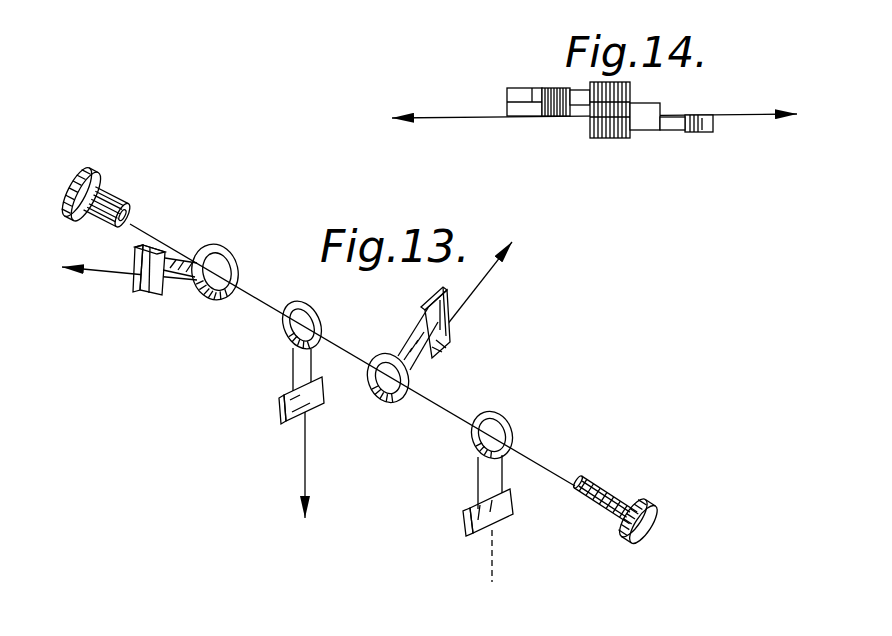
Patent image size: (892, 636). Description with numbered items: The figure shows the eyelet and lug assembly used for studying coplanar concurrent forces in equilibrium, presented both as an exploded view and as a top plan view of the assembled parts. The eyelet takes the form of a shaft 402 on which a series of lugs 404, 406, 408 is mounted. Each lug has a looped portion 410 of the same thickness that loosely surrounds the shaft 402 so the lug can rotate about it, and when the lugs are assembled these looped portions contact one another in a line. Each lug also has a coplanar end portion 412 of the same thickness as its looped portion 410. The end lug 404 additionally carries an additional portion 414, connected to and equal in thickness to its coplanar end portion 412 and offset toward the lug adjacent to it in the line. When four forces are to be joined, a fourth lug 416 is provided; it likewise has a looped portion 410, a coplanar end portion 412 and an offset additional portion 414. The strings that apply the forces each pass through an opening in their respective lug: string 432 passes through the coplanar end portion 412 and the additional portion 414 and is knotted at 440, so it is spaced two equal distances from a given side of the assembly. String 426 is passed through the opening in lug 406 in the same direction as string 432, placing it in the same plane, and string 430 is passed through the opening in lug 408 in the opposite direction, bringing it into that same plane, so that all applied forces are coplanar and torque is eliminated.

In FIG. 14, the shaft 402 is at (610, 137).
In FIG. 13, the shaft 402 is at (104, 196).
In FIG. 14, the lug 404 is at (517, 120).
In FIG. 13, the lug 404 is at (226, 242).
In FIG. 14, the lug 406 is at (650, 100).
In FIG. 13, the lug 406 is at (295, 302).
In FIG. 14, the lug 408 is at (668, 131).
In FIG. 13, the lug 408 is at (402, 347).
In FIG. 14, the looped portion 410 is at (606, 94).
In FIG. 13, the looped portion 410 is at (213, 299).
In FIG. 14, the coplanar end portion 412 is at (520, 88).
In FIG. 13, the coplanar end portion 412 is at (153, 246).
In FIG. 13, the additional portion 414 is at (151, 276).
In FIG. 13, the fourth lug 416 is at (506, 476).
In FIG. 13, the string 426 is at (308, 468).
In FIG. 14, the string 430 is at (730, 117).
In FIG. 13, the string 430 is at (478, 282).
In FIG. 14, the string 432 is at (458, 116).
In FIG. 13, the string 432 is at (103, 273).
In FIG. 14, the knot 440 is at (532, 88).